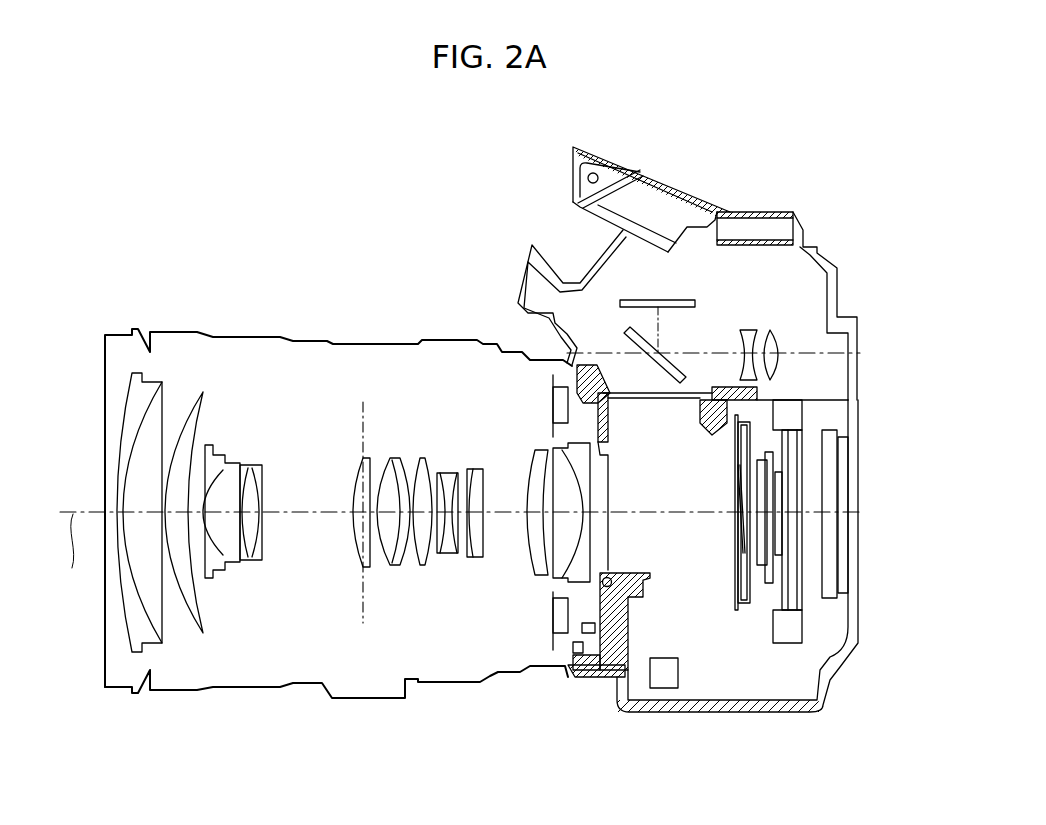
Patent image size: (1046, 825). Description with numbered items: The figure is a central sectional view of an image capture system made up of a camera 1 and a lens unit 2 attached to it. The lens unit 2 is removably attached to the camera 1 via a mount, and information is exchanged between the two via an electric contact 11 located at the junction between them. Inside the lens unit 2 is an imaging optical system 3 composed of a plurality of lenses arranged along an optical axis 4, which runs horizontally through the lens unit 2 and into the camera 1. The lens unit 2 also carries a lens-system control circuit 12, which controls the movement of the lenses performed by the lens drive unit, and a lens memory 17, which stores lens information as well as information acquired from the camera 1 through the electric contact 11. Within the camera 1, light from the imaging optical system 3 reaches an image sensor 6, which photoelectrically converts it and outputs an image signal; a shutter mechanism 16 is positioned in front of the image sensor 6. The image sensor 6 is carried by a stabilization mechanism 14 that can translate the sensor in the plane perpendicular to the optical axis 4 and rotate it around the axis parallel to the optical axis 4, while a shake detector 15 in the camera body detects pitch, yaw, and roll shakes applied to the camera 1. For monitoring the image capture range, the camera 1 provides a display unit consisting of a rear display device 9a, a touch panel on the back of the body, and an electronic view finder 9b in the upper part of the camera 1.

The camera 1 is at (728, 462).
The lens unit 2 is at (356, 504).
The imaging optical system 3 is at (284, 649).
The optical axis 4 is at (70, 560).
The image sensor 6 is at (783, 527).
The rear display device 9a is at (843, 553).
The electronic view finder 9b is at (801, 316).
The electric contact 11 is at (585, 670).
The lens-system control circuit 12 is at (549, 622).
The stabilization mechanism 14 is at (785, 634).
The shake detector 15 is at (663, 678).
The shutter mechanism 16 is at (733, 610).
The lens memory 17 is at (547, 405).